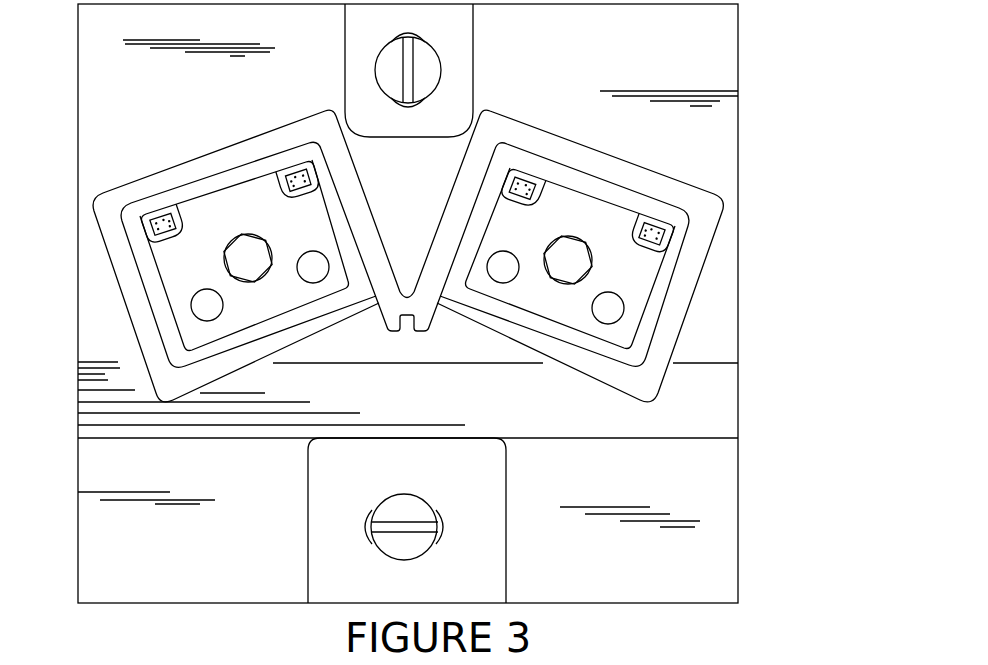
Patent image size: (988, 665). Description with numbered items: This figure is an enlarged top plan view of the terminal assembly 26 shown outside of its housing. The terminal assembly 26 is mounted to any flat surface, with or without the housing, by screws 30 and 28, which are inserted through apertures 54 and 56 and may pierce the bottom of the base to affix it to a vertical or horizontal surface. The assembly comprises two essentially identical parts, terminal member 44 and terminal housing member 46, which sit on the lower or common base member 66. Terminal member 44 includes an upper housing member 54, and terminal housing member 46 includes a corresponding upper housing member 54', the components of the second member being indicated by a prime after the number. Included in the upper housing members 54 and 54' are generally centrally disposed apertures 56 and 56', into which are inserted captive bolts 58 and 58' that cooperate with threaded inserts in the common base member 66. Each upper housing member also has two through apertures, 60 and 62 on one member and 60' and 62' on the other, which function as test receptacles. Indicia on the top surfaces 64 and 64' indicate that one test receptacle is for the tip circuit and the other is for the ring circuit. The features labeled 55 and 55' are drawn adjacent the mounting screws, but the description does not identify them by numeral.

The terminal assembly 26 is at (745, 97).
The screw 28 is at (427, 537).
The screw 30 is at (430, 64).
The terminal member 44 is at (162, 271).
The terminal housing member 46 is at (658, 274).
The upper housing member 54 is at (258, 269).
The upper housing member 54' is at (573, 255).
The upper screw washer 55 is at (365, 63).
The lower screw washer 55' is at (347, 534).
The aperture 56 is at (246, 238).
The aperture 56' is at (518, 299).
The captive bolt 58 is at (221, 258).
The captive bolt 58' is at (568, 242).
The through aperture 60 is at (157, 192).
The through aperture 60' is at (704, 212).
The through aperture 62 is at (282, 144).
The through aperture 62' is at (546, 150).
The top surface 64 is at (218, 256).
The top surface 64' is at (570, 295).
The common base member 66 is at (627, 72).